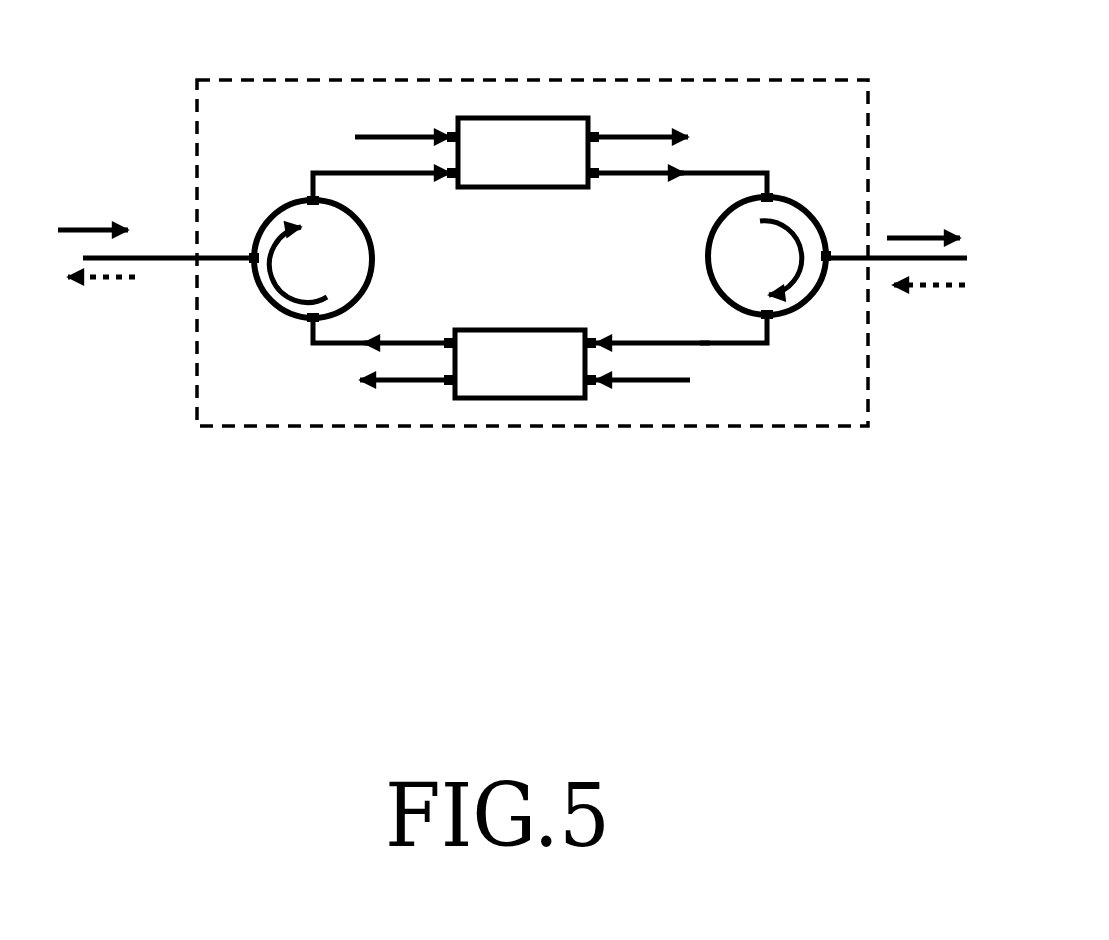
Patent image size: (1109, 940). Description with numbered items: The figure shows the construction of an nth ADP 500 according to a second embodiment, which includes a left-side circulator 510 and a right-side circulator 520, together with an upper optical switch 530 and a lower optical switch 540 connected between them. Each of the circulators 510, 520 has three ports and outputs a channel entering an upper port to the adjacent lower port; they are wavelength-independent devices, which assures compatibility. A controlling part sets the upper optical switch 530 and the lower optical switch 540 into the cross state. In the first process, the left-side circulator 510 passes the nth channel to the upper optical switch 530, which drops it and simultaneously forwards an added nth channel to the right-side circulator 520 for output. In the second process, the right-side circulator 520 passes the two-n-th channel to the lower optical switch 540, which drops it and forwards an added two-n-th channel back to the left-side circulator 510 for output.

The nth ADP 500 is at (522, 266).
The left-side circulator 510 is at (346, 234).
The right-side circulator 520 is at (773, 286).
The upper optical switch 530 is at (526, 124).
The lower optical switch 540 is at (522, 392).